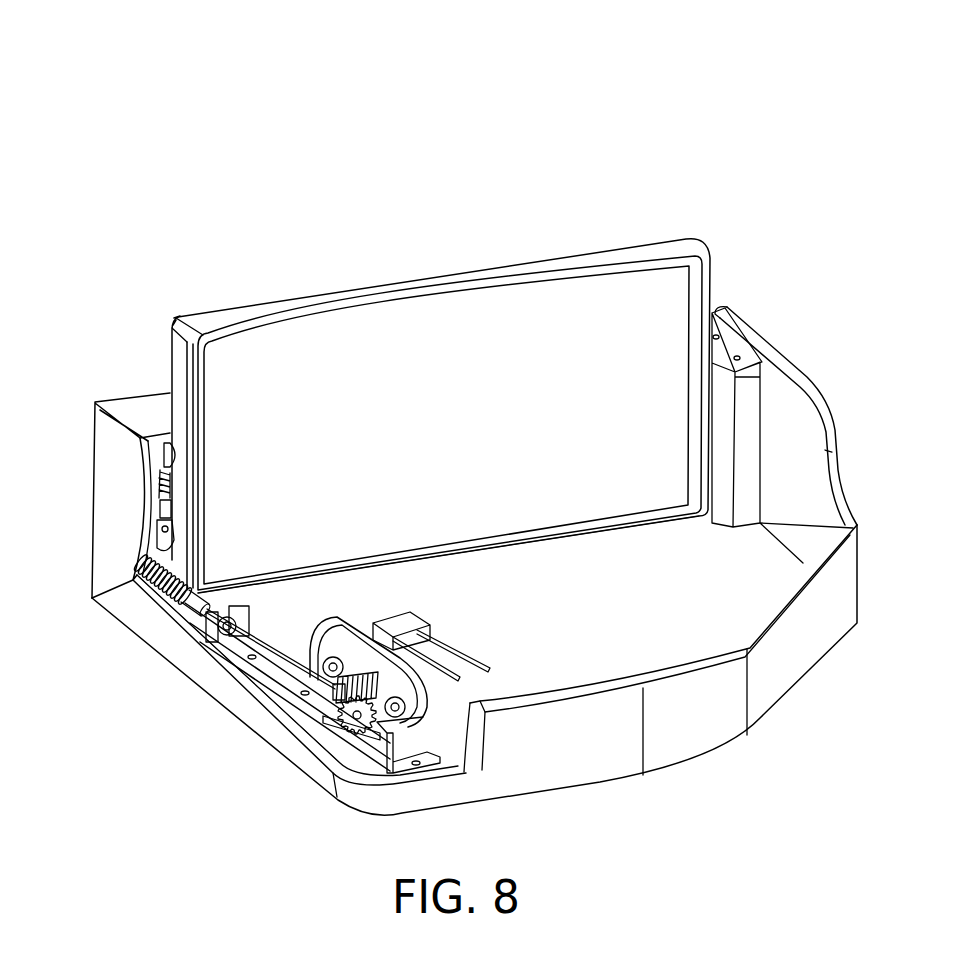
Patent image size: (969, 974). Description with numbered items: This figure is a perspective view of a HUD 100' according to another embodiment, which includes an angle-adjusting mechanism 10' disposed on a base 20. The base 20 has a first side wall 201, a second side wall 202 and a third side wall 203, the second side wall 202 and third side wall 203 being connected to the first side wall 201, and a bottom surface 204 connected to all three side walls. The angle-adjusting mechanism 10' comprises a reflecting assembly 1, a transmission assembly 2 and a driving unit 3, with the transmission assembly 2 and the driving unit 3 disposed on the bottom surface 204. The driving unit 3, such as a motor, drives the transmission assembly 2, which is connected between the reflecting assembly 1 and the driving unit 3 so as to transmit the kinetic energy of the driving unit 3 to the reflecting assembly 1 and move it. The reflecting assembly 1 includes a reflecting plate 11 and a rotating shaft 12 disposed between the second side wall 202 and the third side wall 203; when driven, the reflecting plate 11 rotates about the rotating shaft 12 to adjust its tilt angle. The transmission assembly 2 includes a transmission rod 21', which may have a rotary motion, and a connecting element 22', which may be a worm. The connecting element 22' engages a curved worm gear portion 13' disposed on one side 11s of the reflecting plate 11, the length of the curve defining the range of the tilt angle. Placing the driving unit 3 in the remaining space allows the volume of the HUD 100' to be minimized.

The HUD 100' is at (449, 484).
The reflecting assembly 1 is at (56, 356).
The reflecting plate 11 is at (213, 386).
The side of the reflecting plate 11s is at (174, 348).
The rotating shaft 12 is at (163, 450).
The worm gear portion 13' is at (111, 531).
The transmission assembly 2 is at (66, 690).
The transmission rod 21' is at (229, 696).
The connecting element 22' is at (139, 635).
The driving unit 3 is at (433, 697).
The base 20 is at (783, 722).
The first side wall 201 is at (714, 305).
The second side wall 202 is at (108, 582).
The third side wall 203 is at (787, 357).
The bottom surface 204 is at (627, 626).
The angle-adjusting mechanism 10' is at (660, 672).